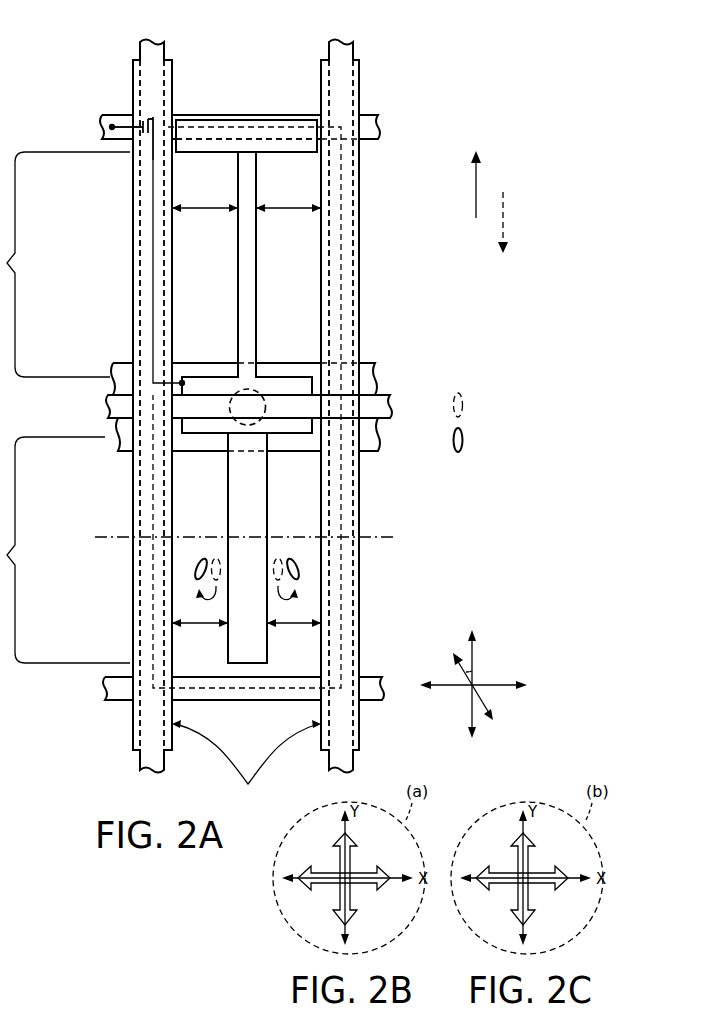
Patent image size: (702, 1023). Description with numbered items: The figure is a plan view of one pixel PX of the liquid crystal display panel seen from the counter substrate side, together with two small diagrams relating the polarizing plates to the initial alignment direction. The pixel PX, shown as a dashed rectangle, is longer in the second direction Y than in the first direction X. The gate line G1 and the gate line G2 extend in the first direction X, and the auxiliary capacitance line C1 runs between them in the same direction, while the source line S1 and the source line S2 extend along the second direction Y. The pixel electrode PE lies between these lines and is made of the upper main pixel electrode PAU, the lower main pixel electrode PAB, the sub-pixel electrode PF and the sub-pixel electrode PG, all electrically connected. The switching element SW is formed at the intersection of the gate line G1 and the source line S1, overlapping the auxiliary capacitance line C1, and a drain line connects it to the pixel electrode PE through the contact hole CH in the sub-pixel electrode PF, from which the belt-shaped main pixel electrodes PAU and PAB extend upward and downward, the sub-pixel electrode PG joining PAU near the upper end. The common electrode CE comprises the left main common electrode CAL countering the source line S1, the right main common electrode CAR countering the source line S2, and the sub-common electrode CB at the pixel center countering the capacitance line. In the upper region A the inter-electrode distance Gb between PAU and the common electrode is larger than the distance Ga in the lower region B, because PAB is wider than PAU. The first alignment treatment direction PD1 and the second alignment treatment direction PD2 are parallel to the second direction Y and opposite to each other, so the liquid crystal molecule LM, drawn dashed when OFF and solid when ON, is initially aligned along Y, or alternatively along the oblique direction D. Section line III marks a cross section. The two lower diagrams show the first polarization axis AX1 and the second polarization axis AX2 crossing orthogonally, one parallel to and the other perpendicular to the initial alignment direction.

In FIG. 2A, the source line S1 is at (154, 46).
In FIG. 2A, the source line S2 is at (339, 46).
In FIG. 2A, the gate line G1 is at (102, 128).
In FIG. 2A, the gate line G2 is at (104, 686).
In FIG. 2A, the auxiliary capacitance line C1 is at (111, 367).
In FIG. 2A, the sub-pixel electrode PG is at (202, 118).
In FIG. 2A, the pixel PX is at (258, 112).
In FIG. 2A, the pixel electrode PE is at (262, 181).
In FIG. 2A, the switching element SW is at (145, 144).
In FIG. 2A, the inter-electrode distance Gb is at (205, 212).
In FIG. 2A, the main pixel electrode PAU is at (257, 276).
In FIG. 2A, the sub-pixel electrode PF is at (228, 380).
In FIG. 2A, the contact hole CH is at (262, 391).
In FIG. 2A, the sub-common electrode CB is at (206, 421).
In FIG. 2A, the main pixel electrode PAB is at (267, 483).
In FIG. 2A, the main common electrode CAR is at (356, 496).
In FIG. 2A, the main common electrode CAL is at (132, 620).
In FIG. 2A, the inter-electrode distance Ga is at (205, 628).
In FIG. 2A, the liquid crystal molecule LM is at (404, 473).
In FIG. 2A, the common electrode CE is at (246, 763).
In FIG. 2A, the section line III is at (242, 537).
In FIG. 2A, the region A is at (65, 264).
In FIG. 2A, the region B is at (65, 550).
In FIG. 2A, the first alignment treatment direction PD1 is at (478, 172).
In FIG. 2A, the second alignment treatment direction PD2 is at (510, 200).
In FIG. 2A, the oblique direction D is at (455, 656).
In FIG. 2B, the first polarization axis AX1 is at (370, 890).
In FIG. 2C, the first polarization axis AX1 is at (530, 848).
In FIG. 2B, the second polarization axis AX2 is at (352, 848).
In FIG. 2C, the second polarization axis AX2 is at (548, 890).